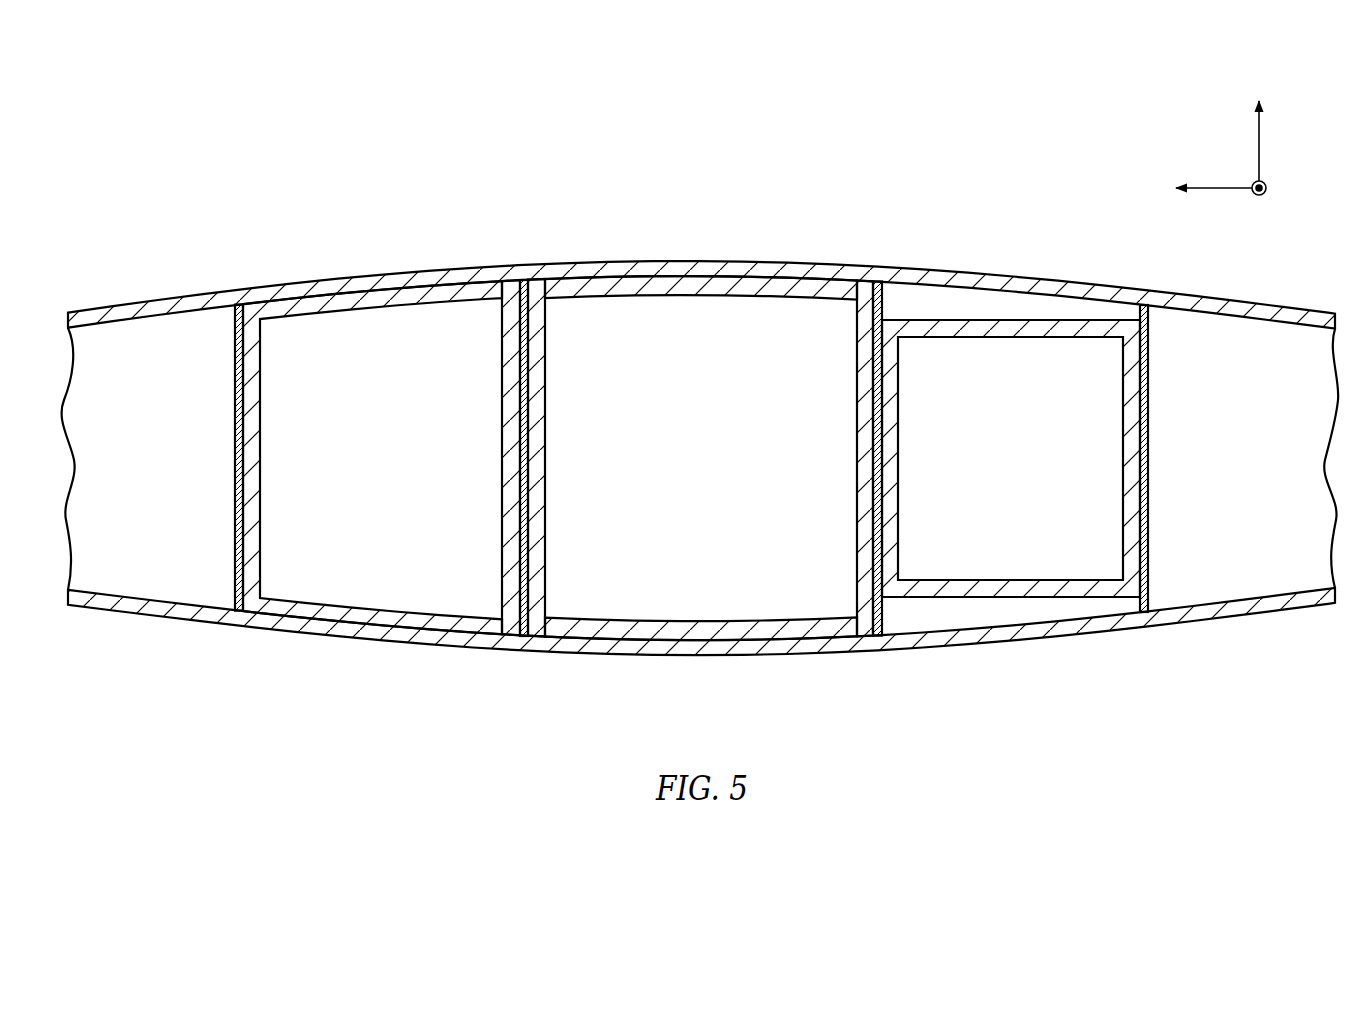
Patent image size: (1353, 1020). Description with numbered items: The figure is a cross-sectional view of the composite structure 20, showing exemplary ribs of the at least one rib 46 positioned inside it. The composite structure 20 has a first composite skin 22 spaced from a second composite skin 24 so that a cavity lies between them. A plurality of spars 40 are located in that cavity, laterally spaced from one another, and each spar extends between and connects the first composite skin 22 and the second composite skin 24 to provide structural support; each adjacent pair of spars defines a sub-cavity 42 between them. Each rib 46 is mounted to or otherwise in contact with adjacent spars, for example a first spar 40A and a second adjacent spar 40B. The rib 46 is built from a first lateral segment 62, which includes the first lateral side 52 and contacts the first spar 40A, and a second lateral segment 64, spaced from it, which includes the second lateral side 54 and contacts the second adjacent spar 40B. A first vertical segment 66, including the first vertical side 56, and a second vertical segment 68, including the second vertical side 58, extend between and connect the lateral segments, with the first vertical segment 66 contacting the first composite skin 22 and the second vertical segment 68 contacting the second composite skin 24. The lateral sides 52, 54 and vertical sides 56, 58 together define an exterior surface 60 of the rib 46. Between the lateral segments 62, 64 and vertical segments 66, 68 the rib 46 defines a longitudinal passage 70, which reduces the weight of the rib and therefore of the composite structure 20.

The composite structure 20 is at (190, 168).
The first composite skin 22 is at (458, 268).
The second composite skin 24 is at (985, 641).
The plurality of spars 40 is at (693, 458).
The first spar 40A is at (524, 521).
The second adjacent spar 40B is at (878, 511).
The sub-cavity 42 is at (356, 576).
The rib 46 is at (364, 271).
The first lateral side 52 is at (528, 383).
The second lateral side 54 is at (877, 388).
The first vertical side 56 is at (700, 418).
The second vertical side 58 is at (592, 641).
The exterior surface 60 is at (835, 278).
The first lateral segment 62 is at (540, 440).
The second lateral segment 64 is at (862, 440).
The first vertical segment 66 is at (712, 298).
The second vertical segment 68 is at (640, 626).
The longitudinal passage 70 is at (695, 482).